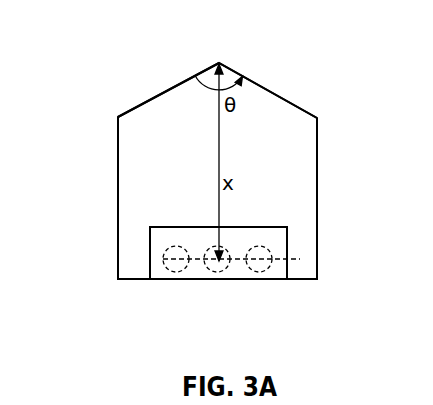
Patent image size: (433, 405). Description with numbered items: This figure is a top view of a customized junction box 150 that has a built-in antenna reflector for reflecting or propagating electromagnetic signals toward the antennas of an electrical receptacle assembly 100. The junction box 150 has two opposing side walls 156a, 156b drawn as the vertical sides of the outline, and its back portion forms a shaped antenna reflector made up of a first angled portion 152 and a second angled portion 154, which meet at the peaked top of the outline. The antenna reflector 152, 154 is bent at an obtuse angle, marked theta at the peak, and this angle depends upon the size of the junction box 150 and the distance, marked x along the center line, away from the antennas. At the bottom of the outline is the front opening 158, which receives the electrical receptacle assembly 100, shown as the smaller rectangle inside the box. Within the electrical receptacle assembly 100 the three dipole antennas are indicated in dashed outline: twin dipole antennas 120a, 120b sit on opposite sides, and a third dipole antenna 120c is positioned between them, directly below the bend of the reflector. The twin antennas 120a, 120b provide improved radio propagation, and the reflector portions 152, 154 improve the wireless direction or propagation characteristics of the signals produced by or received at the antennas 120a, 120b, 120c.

The junction box 150 is at (100, 50).
The first angled portion of the antenna reflector 152 is at (170, 90).
The second angled portion of the antenna reflector 154 is at (268, 90).
The first side wall 156a is at (118, 210).
The second side wall 156b is at (317, 196).
The front opening 158 is at (270, 284).
The electrical receptacle assembly 100 is at (197, 271).
The first dipole antenna 120a is at (164, 257).
The second dipole antenna 120b is at (290, 263).
The third dipole antenna 120c is at (217, 272).